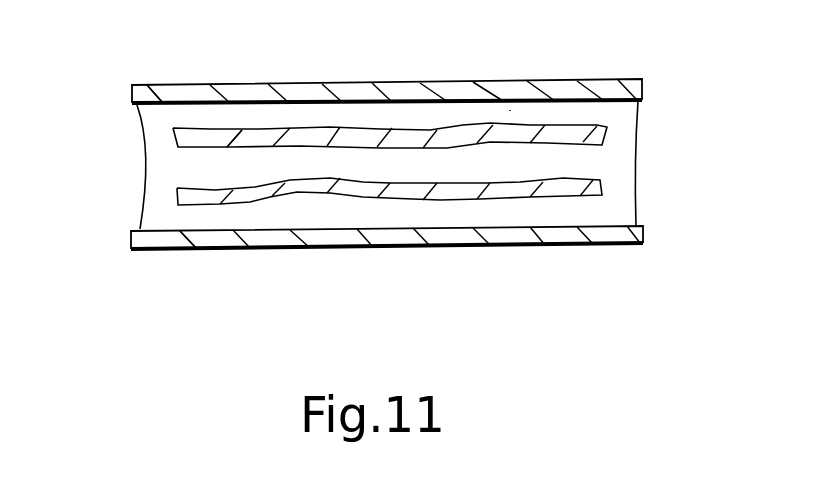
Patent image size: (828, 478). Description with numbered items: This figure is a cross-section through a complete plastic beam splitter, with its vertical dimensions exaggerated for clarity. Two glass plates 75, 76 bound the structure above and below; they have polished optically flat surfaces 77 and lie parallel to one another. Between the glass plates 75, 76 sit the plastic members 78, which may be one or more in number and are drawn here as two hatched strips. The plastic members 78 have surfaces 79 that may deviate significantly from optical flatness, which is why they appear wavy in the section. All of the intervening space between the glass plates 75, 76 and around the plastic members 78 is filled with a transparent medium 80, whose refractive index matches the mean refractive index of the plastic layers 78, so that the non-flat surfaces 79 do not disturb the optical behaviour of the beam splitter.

The glass plate 75 is at (140, 92).
The glass plate 76 is at (140, 238).
The polished optically flat surfaces 77 is at (410, 100).
The plastic members 78 is at (573, 132).
The surfaces 79 is at (295, 187).
The transparent medium 80 is at (510, 110).